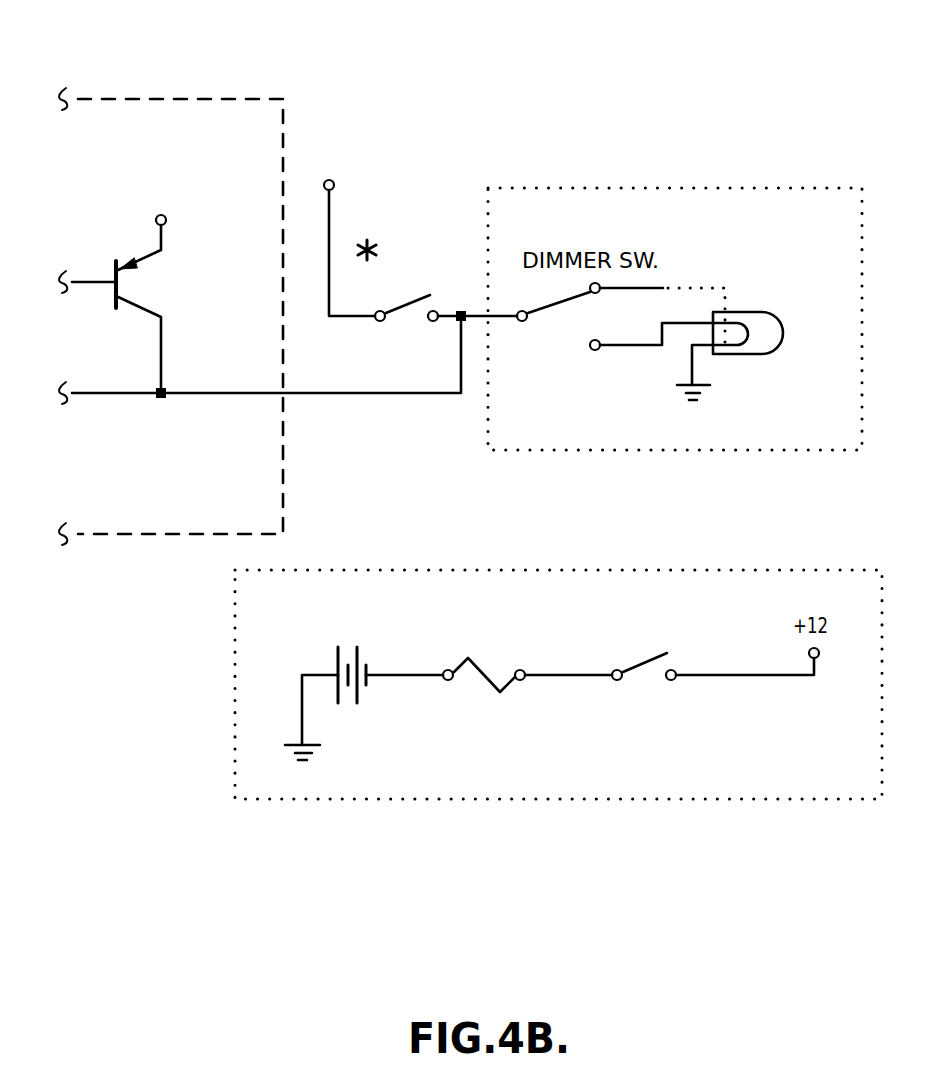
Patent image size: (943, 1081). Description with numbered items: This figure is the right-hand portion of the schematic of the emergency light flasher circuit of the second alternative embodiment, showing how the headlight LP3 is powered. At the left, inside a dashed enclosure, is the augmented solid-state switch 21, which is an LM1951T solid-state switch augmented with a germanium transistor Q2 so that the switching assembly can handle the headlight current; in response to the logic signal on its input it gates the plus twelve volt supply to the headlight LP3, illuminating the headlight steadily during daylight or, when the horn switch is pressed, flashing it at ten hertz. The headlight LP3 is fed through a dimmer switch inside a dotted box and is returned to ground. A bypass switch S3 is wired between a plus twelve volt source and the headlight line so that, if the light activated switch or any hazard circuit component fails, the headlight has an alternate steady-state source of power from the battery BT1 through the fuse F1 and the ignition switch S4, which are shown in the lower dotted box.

The augmented solid-state switch 21 is at (253, 99).
The germanium transistor Q2 is at (152, 289).
The switch S3 is at (381, 236).
The headlight LP3 is at (759, 327).
The battery BT1 is at (364, 684).
The fuse F1 is at (484, 677).
The ignition switch S4 is at (642, 642).